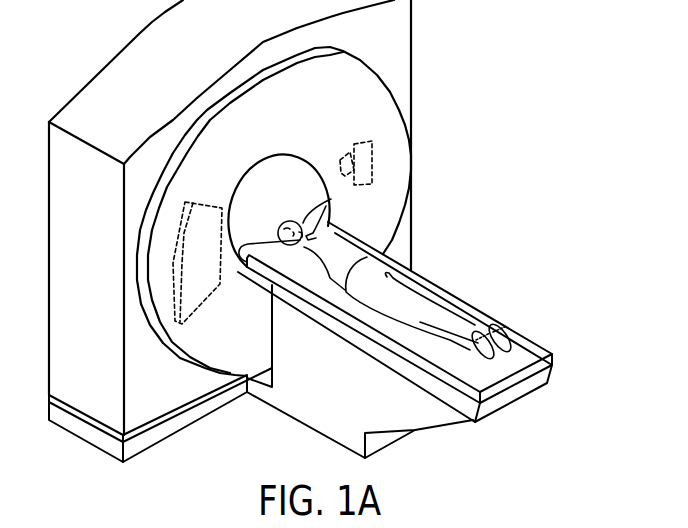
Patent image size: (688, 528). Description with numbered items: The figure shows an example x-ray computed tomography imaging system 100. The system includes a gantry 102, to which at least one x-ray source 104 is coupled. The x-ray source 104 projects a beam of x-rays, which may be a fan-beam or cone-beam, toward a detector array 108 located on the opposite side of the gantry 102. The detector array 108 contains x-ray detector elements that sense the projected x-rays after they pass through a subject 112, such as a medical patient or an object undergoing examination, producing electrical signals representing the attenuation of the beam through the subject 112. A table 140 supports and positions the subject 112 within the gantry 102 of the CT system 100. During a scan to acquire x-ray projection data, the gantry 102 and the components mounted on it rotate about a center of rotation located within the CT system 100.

The CT imaging system 100 is at (494, 47).
The gantry 102 is at (411, 124).
The x-ray source 104 is at (359, 137).
The detector array 108 is at (212, 203).
The subject 112 is at (349, 231).
The table 140 is at (534, 344).